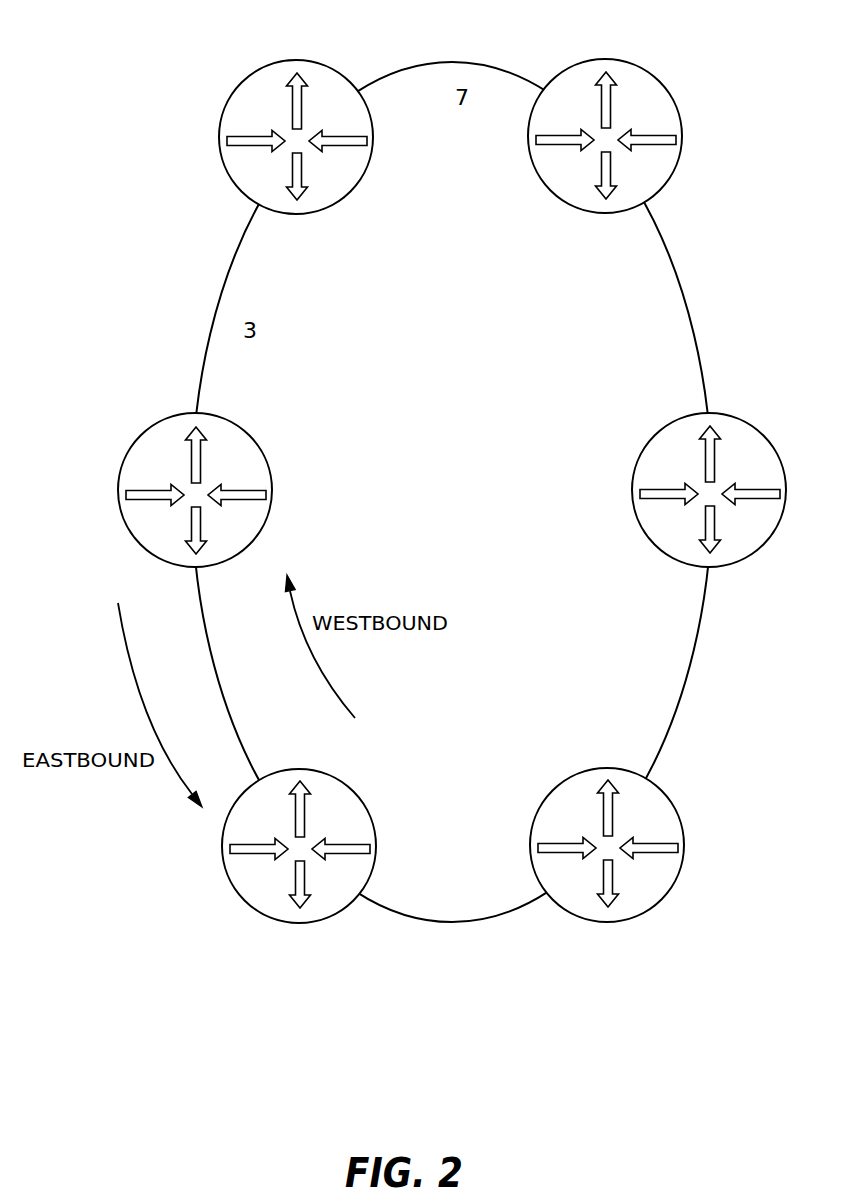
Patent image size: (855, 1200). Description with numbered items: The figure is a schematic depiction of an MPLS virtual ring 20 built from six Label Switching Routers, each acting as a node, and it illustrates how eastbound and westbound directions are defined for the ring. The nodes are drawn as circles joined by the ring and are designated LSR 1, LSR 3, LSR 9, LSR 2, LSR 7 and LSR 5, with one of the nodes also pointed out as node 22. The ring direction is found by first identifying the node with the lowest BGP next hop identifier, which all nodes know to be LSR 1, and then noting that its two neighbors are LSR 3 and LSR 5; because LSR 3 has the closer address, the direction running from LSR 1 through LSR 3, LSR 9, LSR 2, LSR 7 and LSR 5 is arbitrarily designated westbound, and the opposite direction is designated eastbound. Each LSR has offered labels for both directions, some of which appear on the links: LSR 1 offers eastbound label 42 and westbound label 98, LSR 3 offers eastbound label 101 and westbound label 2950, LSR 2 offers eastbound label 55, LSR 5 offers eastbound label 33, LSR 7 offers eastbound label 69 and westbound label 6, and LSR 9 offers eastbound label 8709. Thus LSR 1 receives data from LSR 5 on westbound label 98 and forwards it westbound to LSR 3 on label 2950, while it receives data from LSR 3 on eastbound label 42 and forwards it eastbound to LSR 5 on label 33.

The ring network 20 is at (680, 290).
The network node 22 is at (678, 110).
The label switching router 1 is at (252, 947).
The label switching router 2 is at (696, 211).
The label switching router 3 is at (137, 576).
The label switching router 5 is at (687, 932).
The label switching router 7 is at (763, 600).
The label switching router 9 is at (218, 200).
The eastbound label 8709 is at (475, 37).
The eastbound label 101 is at (173, 317).
The westbound label 6 is at (657, 339).
The eastbound label 55 is at (721, 324).
The eastbound label 33 is at (561, 801).
The eastbound label 69 is at (723, 669).
The westbound label 98 is at (456, 894).
The westbound label 2950 is at (273, 692).
The eastbound label 42 is at (163, 705).